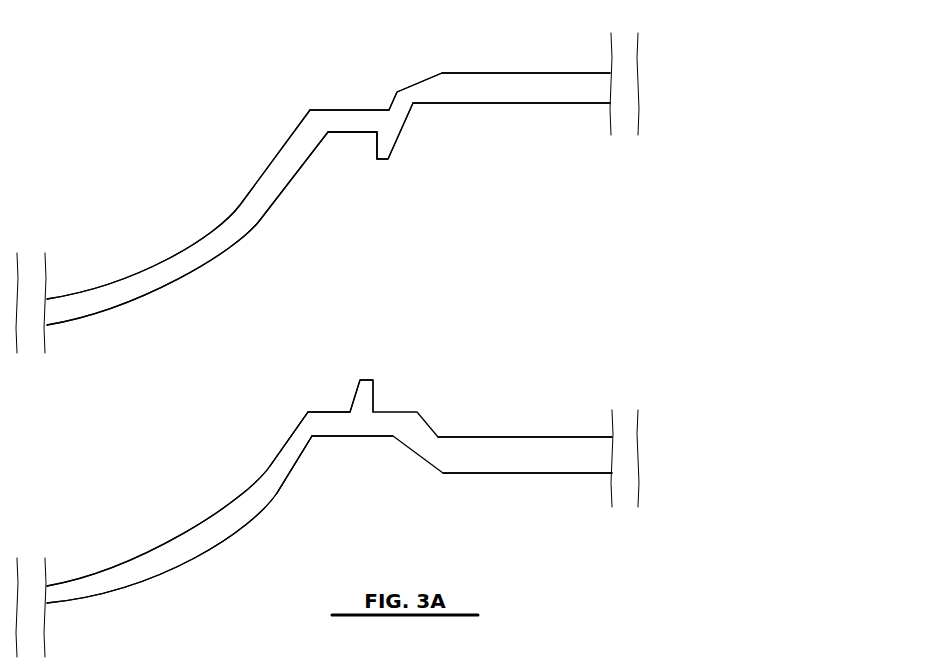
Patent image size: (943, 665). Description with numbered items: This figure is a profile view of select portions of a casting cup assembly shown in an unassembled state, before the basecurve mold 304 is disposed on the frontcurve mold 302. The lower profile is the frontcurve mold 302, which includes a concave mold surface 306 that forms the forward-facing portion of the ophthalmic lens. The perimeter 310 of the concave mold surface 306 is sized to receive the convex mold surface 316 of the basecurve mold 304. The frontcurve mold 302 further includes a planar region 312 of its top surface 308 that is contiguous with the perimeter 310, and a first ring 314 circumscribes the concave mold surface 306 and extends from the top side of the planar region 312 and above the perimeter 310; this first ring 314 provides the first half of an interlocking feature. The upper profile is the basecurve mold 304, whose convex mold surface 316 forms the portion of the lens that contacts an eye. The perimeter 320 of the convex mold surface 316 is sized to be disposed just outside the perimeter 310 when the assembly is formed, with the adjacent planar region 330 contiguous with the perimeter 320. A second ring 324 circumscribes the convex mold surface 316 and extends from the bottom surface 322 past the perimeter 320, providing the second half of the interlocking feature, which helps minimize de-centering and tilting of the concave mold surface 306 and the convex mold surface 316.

The frontcurve mold 302 is at (527, 462).
The basecurve mold 304 is at (542, 93).
The concave mold surface 306 is at (217, 513).
The top surface 308 is at (482, 437).
The perimeter 310 is at (303, 410).
The planar region 312 is at (335, 412).
The first ring 314 is at (375, 381).
The convex mold surface 316 is at (143, 298).
The perimeter 320 is at (327, 135).
The bottom surface 322 is at (490, 105).
The second ring 324 is at (388, 136).
The adjacent planar region 330 is at (358, 135).